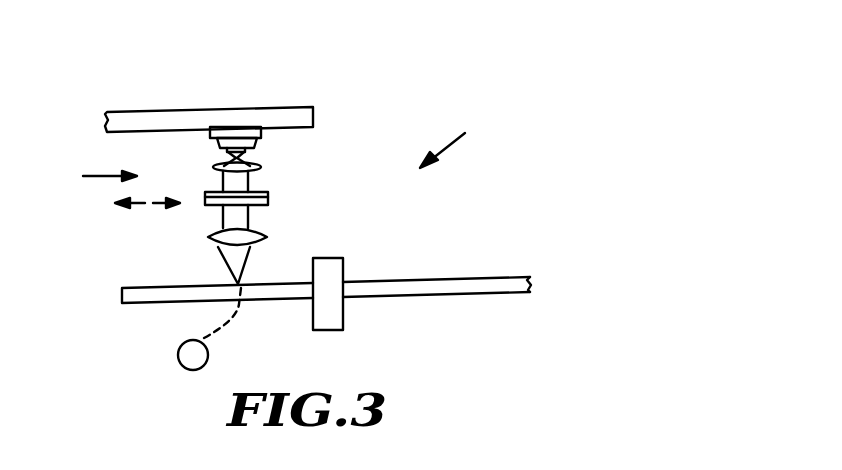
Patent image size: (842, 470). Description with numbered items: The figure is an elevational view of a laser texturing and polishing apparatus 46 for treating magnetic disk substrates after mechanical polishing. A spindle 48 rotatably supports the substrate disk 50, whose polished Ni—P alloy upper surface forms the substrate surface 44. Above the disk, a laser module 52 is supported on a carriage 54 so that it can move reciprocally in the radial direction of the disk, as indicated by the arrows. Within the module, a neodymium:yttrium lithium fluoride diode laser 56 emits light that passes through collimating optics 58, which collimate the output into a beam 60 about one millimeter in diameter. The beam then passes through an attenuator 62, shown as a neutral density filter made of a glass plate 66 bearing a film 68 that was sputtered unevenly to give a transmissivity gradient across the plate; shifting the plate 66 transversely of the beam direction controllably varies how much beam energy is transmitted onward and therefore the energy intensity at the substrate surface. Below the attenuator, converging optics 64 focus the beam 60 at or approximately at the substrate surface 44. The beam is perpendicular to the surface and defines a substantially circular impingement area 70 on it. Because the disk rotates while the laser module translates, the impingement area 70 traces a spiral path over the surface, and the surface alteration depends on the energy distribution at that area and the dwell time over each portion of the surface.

The substrate surface 44 is at (463, 278).
The laser texturing and polishing apparatus 46 is at (458, 141).
The spindle 48 is at (337, 315).
The substrate disk 50 is at (531, 285).
The laser module 52 is at (90, 177).
The carriage 54 is at (282, 117).
The diode laser 56 is at (248, 150).
The collimating optics 58 is at (252, 168).
The beam 60 is at (240, 219).
The attenuator 62 is at (268, 200).
The converging optics 64 is at (218, 241).
The glass plate 66 is at (206, 205).
The film 68 is at (206, 192).
The impingement area 70 is at (195, 354).